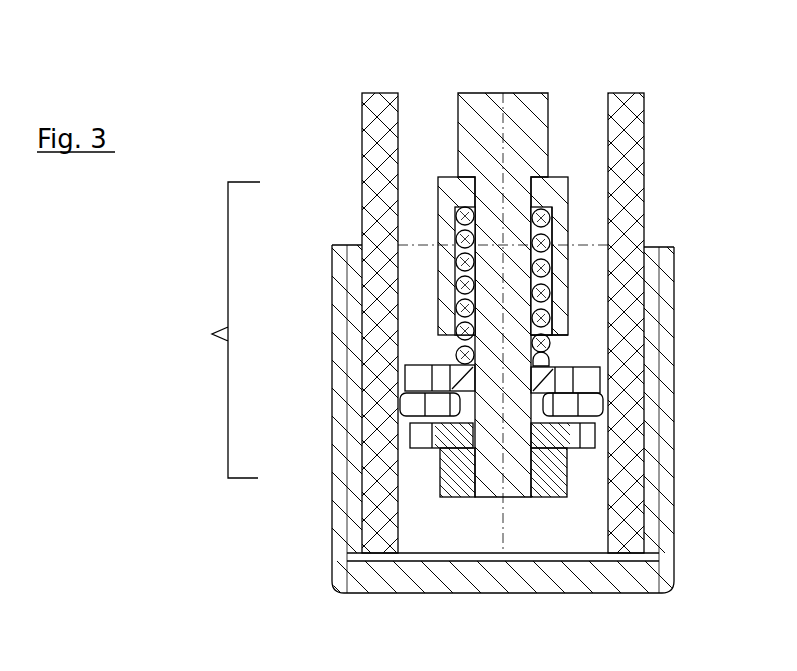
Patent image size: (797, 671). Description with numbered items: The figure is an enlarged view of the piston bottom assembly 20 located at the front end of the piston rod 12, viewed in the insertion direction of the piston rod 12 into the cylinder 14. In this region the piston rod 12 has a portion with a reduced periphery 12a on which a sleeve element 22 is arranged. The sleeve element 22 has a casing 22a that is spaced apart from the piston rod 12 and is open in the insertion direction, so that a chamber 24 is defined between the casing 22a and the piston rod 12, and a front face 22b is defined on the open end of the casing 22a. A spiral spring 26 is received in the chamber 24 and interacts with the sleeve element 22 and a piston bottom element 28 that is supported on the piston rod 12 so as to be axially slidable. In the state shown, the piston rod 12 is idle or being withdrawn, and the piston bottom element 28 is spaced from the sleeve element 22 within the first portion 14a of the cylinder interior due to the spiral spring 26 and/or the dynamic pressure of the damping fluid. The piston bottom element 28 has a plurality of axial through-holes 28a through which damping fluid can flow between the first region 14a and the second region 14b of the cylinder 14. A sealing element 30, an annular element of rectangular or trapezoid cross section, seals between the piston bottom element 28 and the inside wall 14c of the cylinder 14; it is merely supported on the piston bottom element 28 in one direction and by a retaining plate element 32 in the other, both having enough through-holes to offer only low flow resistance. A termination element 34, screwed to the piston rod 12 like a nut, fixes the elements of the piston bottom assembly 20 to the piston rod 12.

The piston rod 12 is at (514, 72).
The reduced periphery portion 12a is at (497, 485).
The cylinder 14 is at (375, 126).
The first portion of the cylinder interior 14a is at (593, 121).
The second region of the cylinder interior 14b is at (570, 538).
The inside wall of the cylinder 14c is at (614, 521).
The piston bottom assembly 20 is at (219, 330).
The sleeve element 22 is at (570, 195).
The casing 22a is at (556, 232).
The front face 22b is at (556, 345).
The chamber 24 is at (447, 240).
The spiral spring 26 is at (552, 266).
The piston bottom element 28 is at (405, 378).
The axial through-holes 28a is at (590, 368).
The sealing element 30 is at (400, 404).
The retaining plate element 32 is at (410, 437).
The termination element 34 is at (440, 497).